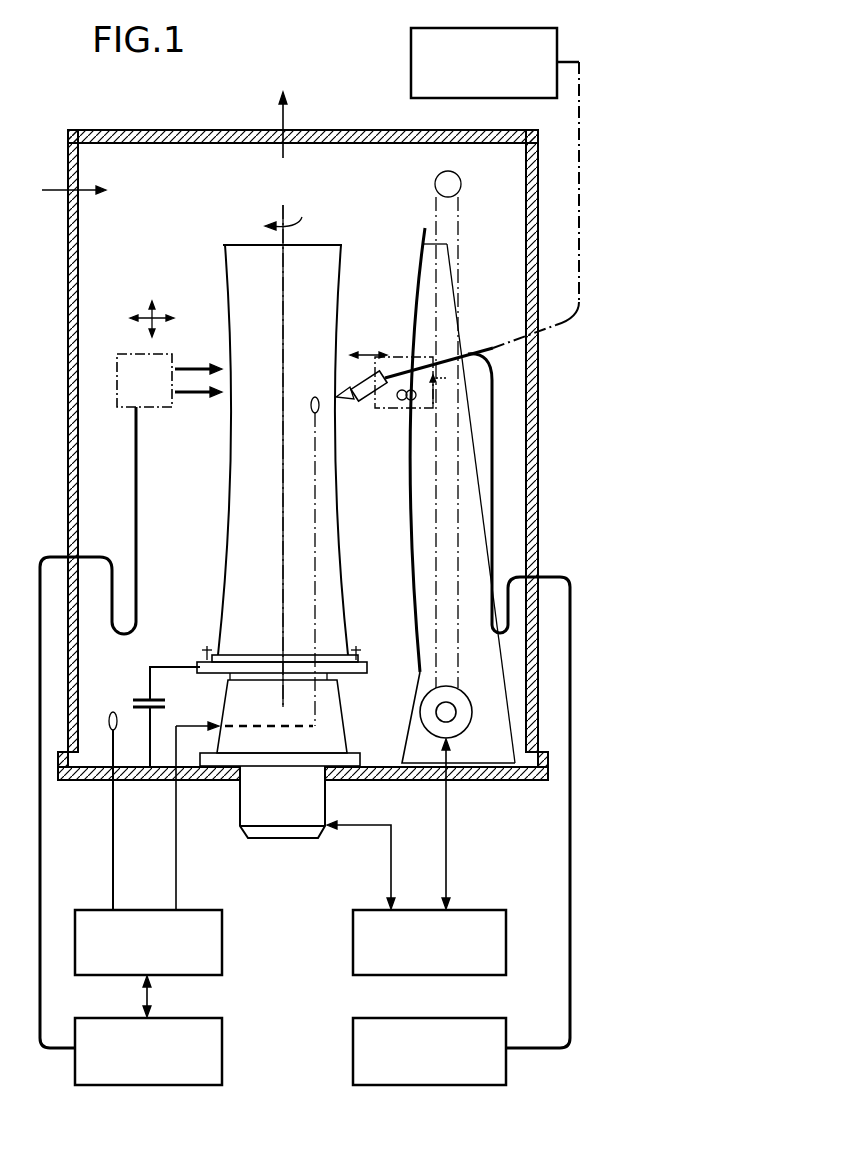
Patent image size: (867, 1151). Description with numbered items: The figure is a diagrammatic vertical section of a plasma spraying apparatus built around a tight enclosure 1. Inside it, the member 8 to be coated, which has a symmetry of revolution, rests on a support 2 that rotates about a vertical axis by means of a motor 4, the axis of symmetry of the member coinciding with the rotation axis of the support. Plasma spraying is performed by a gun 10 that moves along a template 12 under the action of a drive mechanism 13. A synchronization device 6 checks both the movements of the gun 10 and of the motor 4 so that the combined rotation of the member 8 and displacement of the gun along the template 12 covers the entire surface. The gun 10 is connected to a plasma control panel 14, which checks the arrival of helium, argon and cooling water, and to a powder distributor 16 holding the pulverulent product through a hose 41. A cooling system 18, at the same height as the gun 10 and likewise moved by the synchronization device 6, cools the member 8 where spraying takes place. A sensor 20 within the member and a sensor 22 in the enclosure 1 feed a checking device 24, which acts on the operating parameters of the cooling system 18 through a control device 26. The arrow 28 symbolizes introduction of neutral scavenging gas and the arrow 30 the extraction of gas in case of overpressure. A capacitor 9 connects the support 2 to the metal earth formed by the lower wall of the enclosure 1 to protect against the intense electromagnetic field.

The tight enclosure 1 is at (545, 478).
The support 2 is at (345, 735).
The motor 4 is at (248, 810).
The synchronization device 6 is at (358, 960).
The member to be coated 8 is at (232, 527).
The capacitor 9 is at (160, 697).
The gun 10 is at (360, 378).
The template 12 is at (409, 560).
The drive mechanism 13 is at (422, 703).
The plasma control panel 14 is at (353, 1062).
The powder distributor 16 is at (421, 75).
The cooling system 18 is at (160, 396).
The sensor 20 is at (316, 415).
The sensor 22 is at (113, 712).
The checking device 24 is at (212, 956).
The control device 26 is at (212, 1062).
The arrow 28 is at (66, 187).
The arrow 30 is at (281, 118).
The hose 41 is at (578, 313).